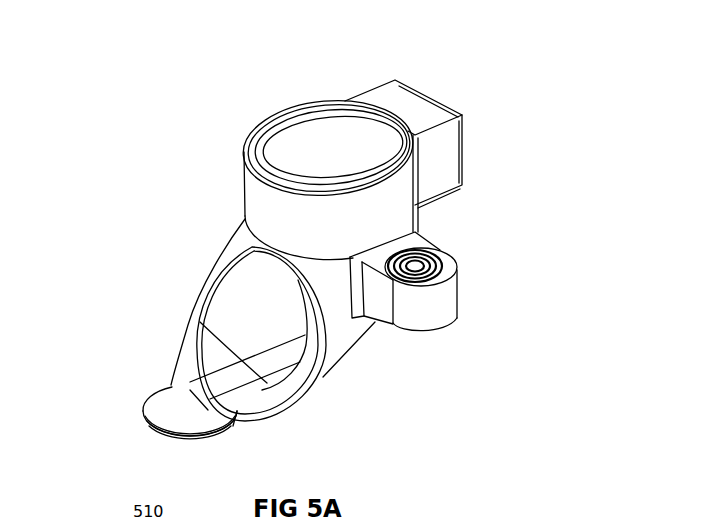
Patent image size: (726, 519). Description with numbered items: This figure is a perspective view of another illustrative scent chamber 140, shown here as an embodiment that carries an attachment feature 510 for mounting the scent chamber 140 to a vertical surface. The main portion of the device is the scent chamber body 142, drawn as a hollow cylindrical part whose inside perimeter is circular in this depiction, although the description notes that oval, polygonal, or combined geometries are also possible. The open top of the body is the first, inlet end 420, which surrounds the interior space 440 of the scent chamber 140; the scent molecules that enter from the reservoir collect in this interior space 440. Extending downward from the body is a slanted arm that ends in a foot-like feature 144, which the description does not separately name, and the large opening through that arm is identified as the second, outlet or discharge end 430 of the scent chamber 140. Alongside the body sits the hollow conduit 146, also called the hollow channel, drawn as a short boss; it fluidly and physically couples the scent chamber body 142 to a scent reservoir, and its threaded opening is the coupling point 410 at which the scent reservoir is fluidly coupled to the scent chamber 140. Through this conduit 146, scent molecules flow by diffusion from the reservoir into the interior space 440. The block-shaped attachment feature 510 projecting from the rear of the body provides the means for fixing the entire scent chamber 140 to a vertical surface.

The scent chamber 140 is at (479, 73).
The scent chamber body 142 is at (247, 188).
The tab 144 is at (146, 411).
The hollow conduit 146 is at (455, 302).
The coupling point 410 is at (437, 253).
The first (inlet) end 420 is at (338, 113).
The second (outlet or discharge) end 430 is at (307, 333).
The interior space 440 is at (356, 146).
The attachment feature 510 is at (463, 155).